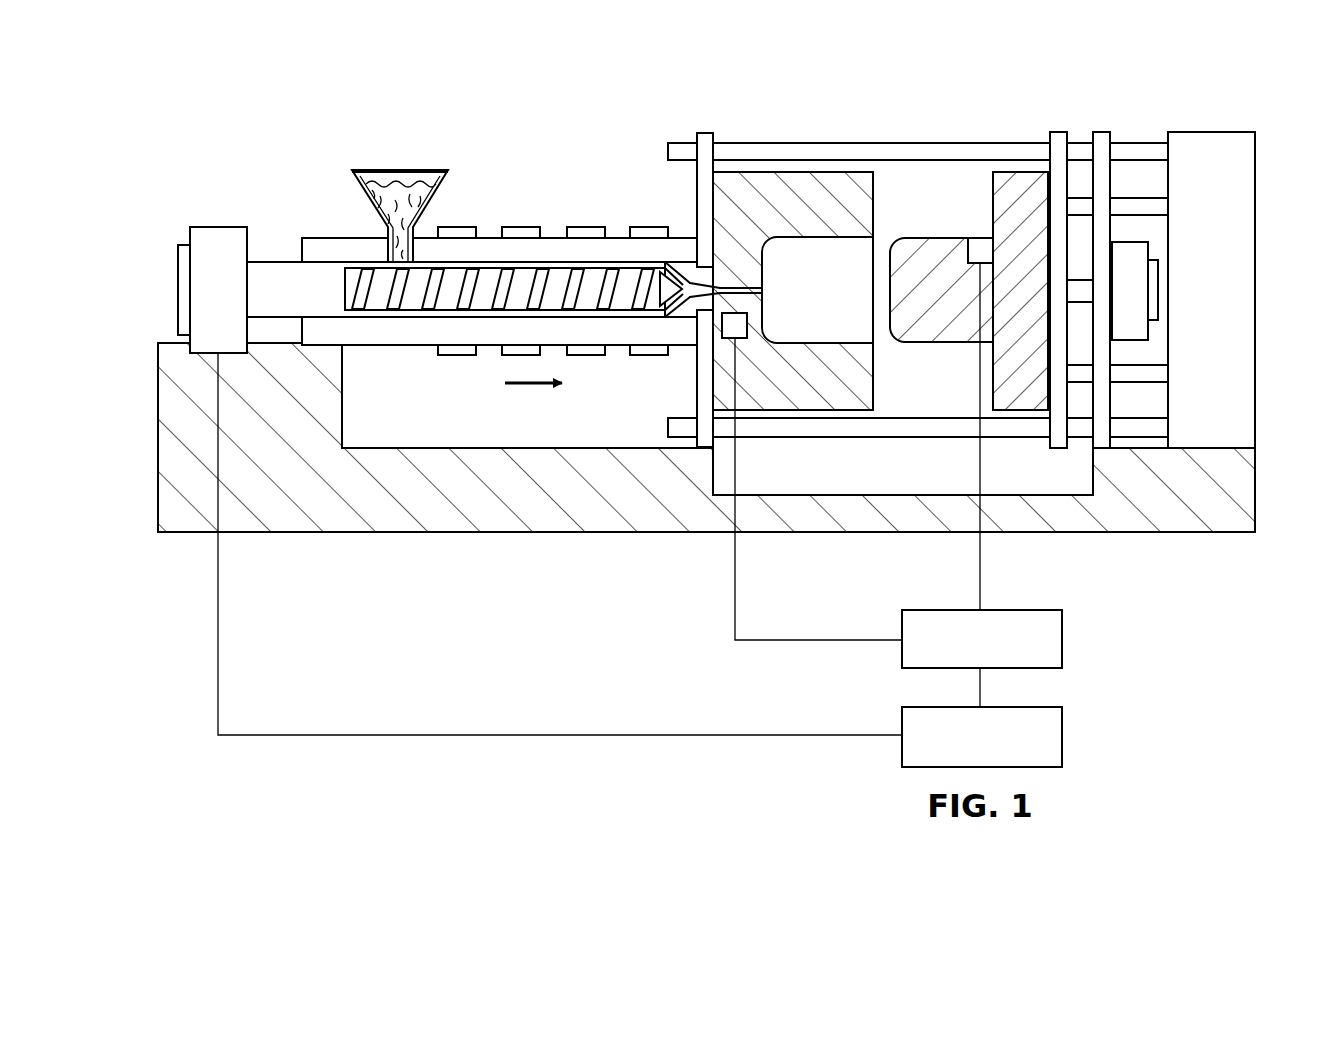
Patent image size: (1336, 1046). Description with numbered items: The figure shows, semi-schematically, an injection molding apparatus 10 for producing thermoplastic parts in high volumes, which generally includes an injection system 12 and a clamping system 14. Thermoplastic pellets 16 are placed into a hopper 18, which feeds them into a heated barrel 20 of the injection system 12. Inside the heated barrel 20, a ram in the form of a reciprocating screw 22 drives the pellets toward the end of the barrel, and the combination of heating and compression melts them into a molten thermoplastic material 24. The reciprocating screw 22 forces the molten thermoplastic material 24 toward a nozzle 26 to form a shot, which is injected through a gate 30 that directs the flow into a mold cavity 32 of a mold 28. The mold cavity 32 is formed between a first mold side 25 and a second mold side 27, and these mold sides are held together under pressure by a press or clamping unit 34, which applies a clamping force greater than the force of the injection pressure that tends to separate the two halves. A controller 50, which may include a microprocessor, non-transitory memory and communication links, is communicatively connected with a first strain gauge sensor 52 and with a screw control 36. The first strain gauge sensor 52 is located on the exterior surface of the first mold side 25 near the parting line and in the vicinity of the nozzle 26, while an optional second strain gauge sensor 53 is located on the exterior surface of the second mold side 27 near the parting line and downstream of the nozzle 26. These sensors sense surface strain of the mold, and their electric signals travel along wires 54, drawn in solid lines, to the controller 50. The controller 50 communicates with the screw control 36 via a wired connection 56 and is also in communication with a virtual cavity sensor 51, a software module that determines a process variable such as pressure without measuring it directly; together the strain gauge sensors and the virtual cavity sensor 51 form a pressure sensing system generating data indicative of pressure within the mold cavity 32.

The injection molding apparatus 10 is at (503, 108).
The injection system 12 is at (467, 385).
The clamping system 14 is at (915, 542).
The thermoplastic pellets 16 is at (368, 207).
The hopper 18 is at (400, 166).
The heated barrel 20 is at (553, 232).
The reciprocating screw 22 is at (410, 312).
The molten thermoplastic material 24 is at (625, 268).
The first mold side 25 is at (866, 358).
The nozzle 26 is at (728, 278).
The second mold side 27 is at (967, 335).
The mold 28 is at (877, 160).
The gate 30 is at (760, 290).
The mold cavity 32 is at (832, 247).
The clamping unit 34 is at (1180, 112).
The screw control 36 is at (218, 227).
The controller 50 is at (1063, 648).
The virtual cavity sensor 51 is at (1063, 745).
The first strain gauge sensor 52 is at (722, 338).
The second strain gauge sensor 53 is at (980, 240).
The wires 54 is at (983, 566).
The wired connection 56 is at (545, 737).